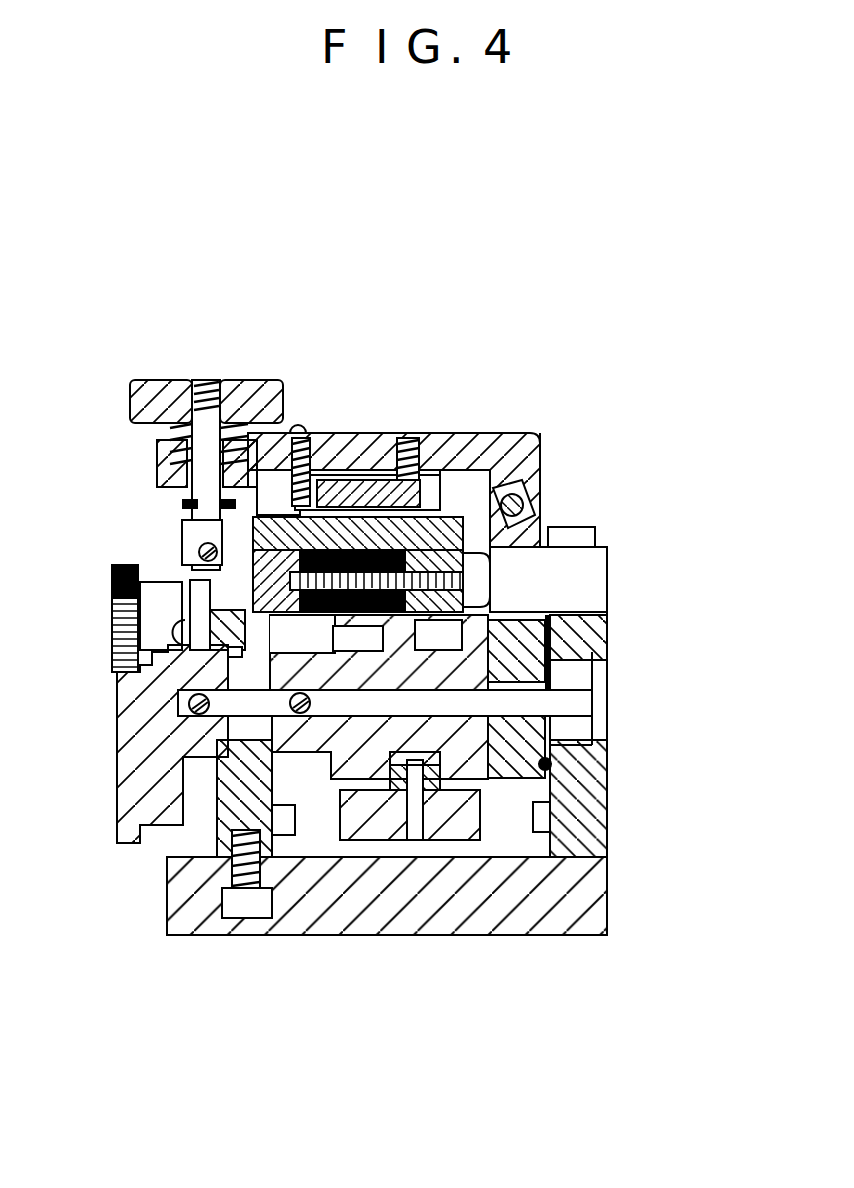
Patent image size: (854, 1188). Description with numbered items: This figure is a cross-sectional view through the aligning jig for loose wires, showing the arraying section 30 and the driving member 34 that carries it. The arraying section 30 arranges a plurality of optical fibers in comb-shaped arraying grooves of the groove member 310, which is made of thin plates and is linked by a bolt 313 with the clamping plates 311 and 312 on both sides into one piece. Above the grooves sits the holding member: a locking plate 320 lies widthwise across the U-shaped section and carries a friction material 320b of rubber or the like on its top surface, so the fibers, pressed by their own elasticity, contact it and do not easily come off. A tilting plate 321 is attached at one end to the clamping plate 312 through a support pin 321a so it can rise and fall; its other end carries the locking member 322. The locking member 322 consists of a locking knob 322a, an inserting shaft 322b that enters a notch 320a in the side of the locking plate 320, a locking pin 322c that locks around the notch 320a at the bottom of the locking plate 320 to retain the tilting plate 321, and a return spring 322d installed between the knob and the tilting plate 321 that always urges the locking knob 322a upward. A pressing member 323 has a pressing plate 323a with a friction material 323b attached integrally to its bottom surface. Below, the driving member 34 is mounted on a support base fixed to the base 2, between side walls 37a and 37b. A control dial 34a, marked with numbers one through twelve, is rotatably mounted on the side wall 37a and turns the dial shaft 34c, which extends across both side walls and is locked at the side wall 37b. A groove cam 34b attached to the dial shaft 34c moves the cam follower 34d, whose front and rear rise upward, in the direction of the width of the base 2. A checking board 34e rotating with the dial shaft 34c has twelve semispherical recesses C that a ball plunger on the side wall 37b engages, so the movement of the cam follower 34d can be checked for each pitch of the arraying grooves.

The arraying section 30 is at (368, 251).
The base 2 is at (428, 923).
The driving member 34 is at (124, 850).
The control dial 34a is at (128, 705).
The groove cam 34b is at (312, 752).
The dial shaft 34c is at (572, 700).
The cam follower 34d is at (470, 835).
The checking board 34e is at (555, 665).
The side wall 37a is at (225, 810).
The side wall 37b is at (598, 822).
The semispherical recess C is at (555, 766).
The groove member 310 is at (478, 612).
The clamping plate 311 is at (245, 605).
The clamping plate 312 is at (537, 540).
The bolt 313 is at (480, 585).
The locking plate 320 is at (505, 500).
The notch 320a is at (247, 527).
The friction material 320b is at (470, 517).
The tilting plate 321 is at (368, 428).
The support pin 321a is at (523, 517).
The locking member 322 is at (166, 376).
The locking knob 322a is at (258, 394).
The inserting shaft 322b is at (203, 490).
The locking pin 322c is at (202, 548).
The return spring 322d is at (178, 430).
The pressing member 323 is at (430, 470).
The pressing plate 323a is at (370, 475).
The friction material 323b is at (425, 515).